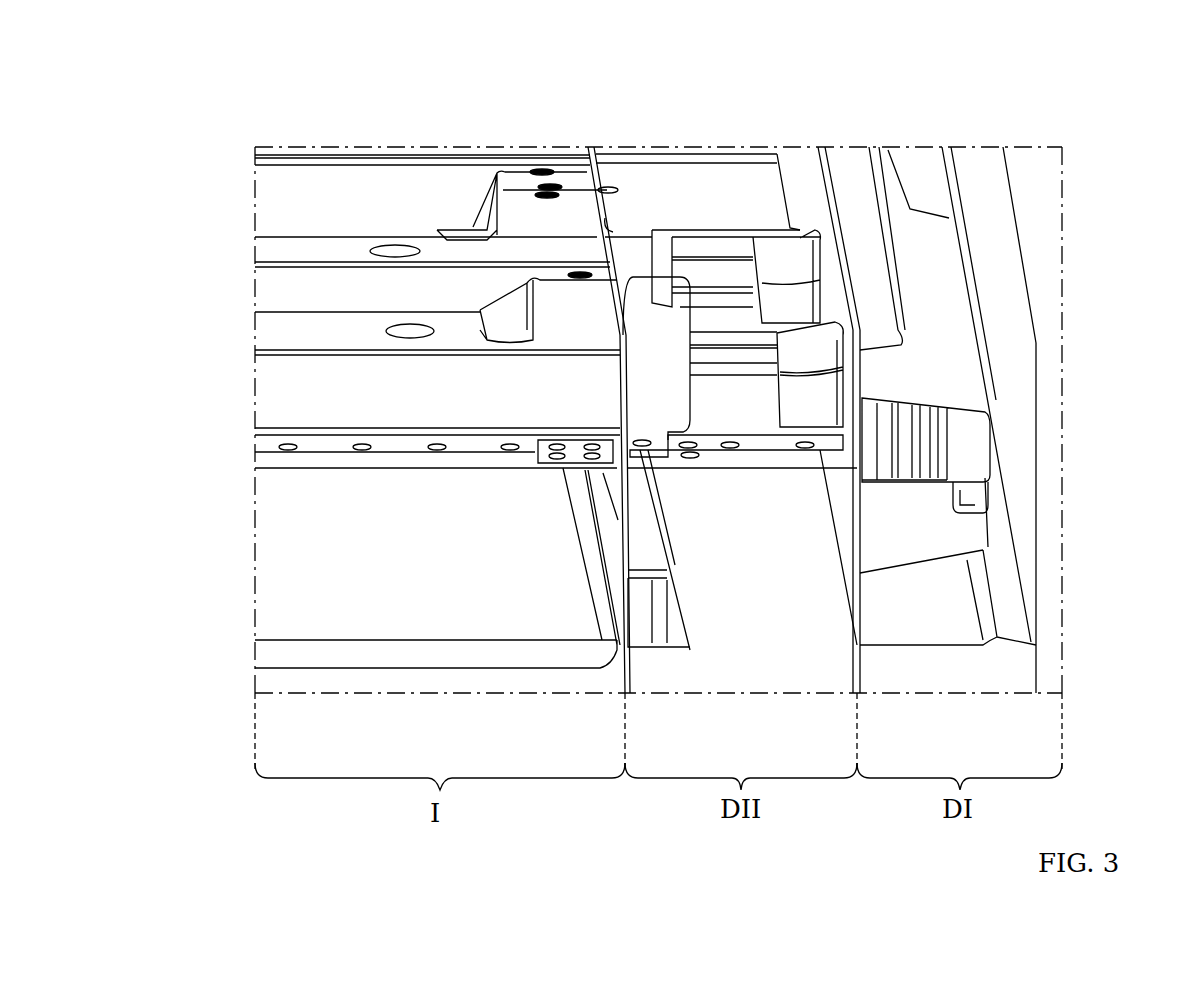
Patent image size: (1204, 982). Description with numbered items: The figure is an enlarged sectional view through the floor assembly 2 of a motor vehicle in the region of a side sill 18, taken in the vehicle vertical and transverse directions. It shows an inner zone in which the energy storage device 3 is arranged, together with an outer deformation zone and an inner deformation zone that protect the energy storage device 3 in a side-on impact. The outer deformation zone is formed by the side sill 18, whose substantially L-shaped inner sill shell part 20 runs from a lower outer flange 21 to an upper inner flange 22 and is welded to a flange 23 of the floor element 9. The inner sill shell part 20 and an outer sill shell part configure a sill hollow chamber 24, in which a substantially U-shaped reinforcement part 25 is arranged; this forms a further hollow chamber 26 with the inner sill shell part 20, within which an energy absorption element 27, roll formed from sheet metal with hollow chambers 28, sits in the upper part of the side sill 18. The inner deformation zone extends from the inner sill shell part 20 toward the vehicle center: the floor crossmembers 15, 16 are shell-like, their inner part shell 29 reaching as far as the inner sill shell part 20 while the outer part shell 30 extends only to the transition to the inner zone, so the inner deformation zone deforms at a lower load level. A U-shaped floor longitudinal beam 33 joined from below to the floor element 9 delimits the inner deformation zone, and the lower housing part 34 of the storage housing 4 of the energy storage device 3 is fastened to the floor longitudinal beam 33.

The floor assembly 2 is at (384, 145).
The energy storage device 3 is at (342, 570).
The storage housing 4 is at (540, 610).
The floor element 9 is at (712, 187).
The floor crossmember 15 is at (278, 395).
The floor crossmember 16 is at (275, 248).
The side sill 18 is at (908, 145).
The inner sill shell part 20 is at (947, 562).
The lower outer flange 21 is at (1007, 617).
The upper inner flange 22 is at (903, 307).
The flange 23 is at (840, 538).
The sill hollow chamber 24 is at (942, 620).
The reinforcement part 25 is at (945, 527).
The hollow chamber 26 is at (898, 517).
The energy absorption element 27 is at (945, 457).
The hollow chambers 28 is at (960, 437).
The inner part shell 29 is at (762, 427).
The outer part shell 30 is at (648, 388).
The floor longitudinal beam 33 is at (642, 530).
The lower housing part 34 is at (275, 658).